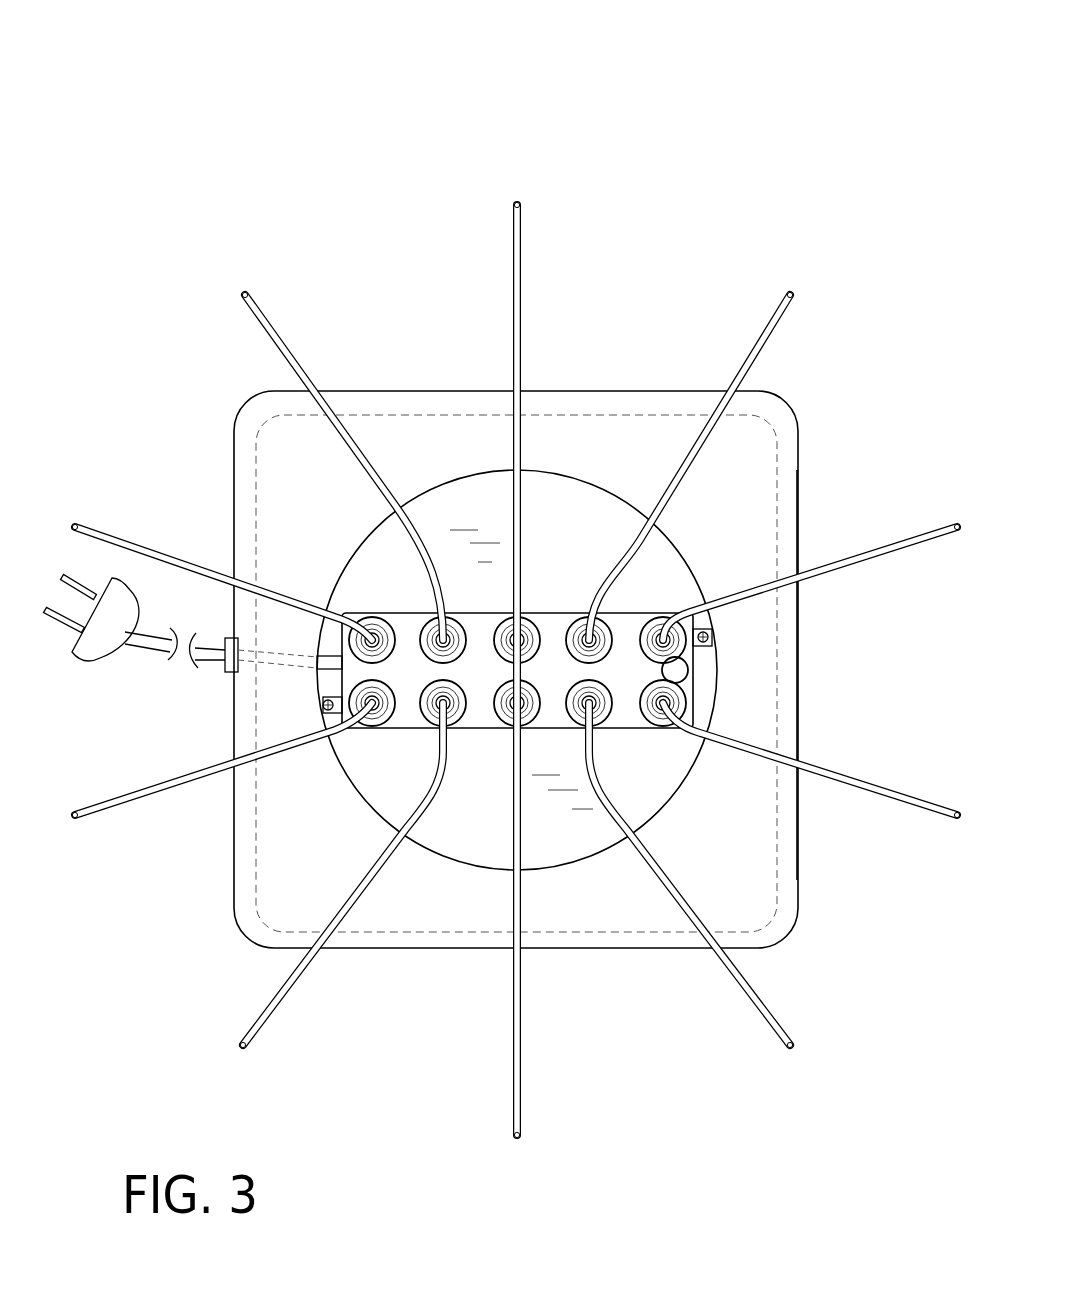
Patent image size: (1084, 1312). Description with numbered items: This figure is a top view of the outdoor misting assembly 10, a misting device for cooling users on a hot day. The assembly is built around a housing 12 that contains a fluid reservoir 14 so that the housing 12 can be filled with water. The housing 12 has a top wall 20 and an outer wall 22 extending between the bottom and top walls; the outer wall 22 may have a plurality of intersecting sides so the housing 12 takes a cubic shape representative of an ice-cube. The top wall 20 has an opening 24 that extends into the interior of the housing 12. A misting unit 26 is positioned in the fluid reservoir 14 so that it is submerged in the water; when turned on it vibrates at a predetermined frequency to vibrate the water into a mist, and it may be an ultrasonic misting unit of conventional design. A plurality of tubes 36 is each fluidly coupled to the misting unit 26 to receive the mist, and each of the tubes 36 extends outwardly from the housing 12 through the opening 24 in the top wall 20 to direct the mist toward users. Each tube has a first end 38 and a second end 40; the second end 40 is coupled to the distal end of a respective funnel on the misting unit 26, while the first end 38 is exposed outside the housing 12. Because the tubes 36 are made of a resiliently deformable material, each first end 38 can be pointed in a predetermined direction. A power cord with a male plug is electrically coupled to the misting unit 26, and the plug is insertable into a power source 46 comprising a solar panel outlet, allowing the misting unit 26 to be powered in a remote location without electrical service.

The outdoor misting assembly 10 is at (502, 570).
The housing 12 is at (234, 440).
The fluid reservoir 14 is at (590, 503).
The top wall 20 is at (430, 427).
The outer wall 22 is at (797, 713).
The opening 24 is at (545, 867).
The misting unit 26 is at (480, 728).
The tubes 36 is at (340, 423).
The first end 38 is at (790, 295).
The second end 40 is at (605, 638).
The power source 46 is at (150, 643).